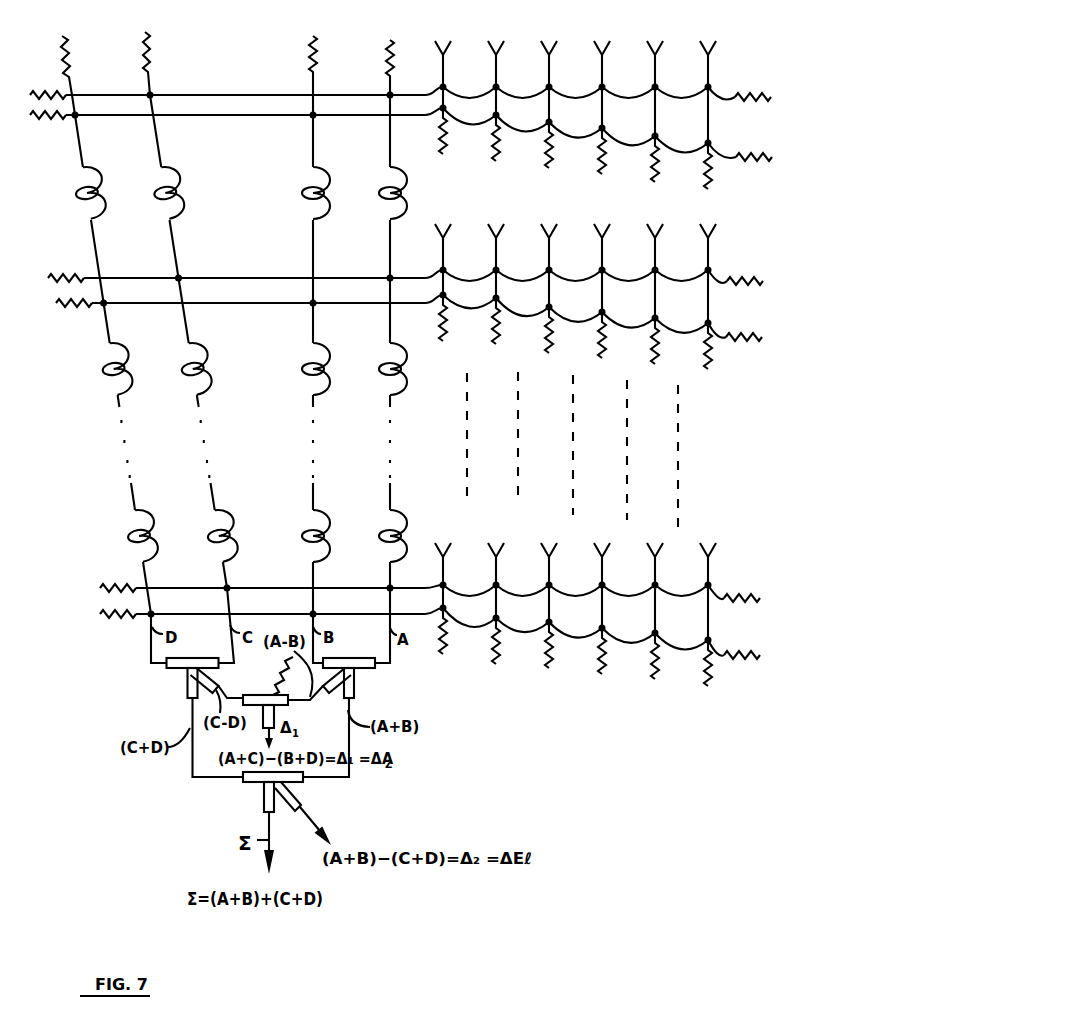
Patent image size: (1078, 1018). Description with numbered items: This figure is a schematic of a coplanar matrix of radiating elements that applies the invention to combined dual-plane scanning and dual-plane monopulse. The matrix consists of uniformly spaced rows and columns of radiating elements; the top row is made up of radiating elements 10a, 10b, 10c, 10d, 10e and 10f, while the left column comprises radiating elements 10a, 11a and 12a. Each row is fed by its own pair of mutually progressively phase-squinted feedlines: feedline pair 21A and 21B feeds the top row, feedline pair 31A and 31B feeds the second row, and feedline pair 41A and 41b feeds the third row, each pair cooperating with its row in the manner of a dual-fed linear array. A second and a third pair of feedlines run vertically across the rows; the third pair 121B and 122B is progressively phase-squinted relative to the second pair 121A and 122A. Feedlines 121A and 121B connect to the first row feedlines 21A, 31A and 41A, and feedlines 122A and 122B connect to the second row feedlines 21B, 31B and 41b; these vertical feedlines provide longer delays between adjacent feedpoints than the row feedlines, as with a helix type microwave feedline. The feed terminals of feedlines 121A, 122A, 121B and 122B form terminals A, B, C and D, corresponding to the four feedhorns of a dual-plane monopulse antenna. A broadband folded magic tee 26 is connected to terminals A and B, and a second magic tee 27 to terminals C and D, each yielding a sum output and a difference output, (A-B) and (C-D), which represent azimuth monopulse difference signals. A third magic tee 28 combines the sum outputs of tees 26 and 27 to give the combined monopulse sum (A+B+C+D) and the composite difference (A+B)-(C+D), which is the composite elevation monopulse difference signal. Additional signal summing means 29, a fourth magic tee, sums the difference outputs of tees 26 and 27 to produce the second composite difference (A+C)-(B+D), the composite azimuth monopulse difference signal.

The radiating element 10a is at (445, 43).
The radiating element 10b is at (498, 43).
The radiating element 10c is at (551, 43).
The radiating element 10d is at (604, 43).
The radiating element 10e is at (657, 43).
The radiating element 10f is at (710, 43).
The radiating element 11a is at (447, 228).
The radiating element 12a is at (436, 547).
The feedline 21A is at (268, 94).
The feedline 21B is at (250, 118).
The feedline 31A is at (277, 277).
The feedline 31B is at (282, 305).
The feedline 41A is at (370, 588).
The feedline 41b is at (377, 614).
The feedline 121A is at (388, 257).
The feedline 121B is at (175, 250).
The feedline 122A is at (307, 247).
The feedline 122B is at (112, 242).
The first magic tee 26 is at (352, 665).
The second magic tee 27 is at (188, 678).
The third magic tee 28 is at (313, 791).
The signal summing means 29 is at (289, 706).